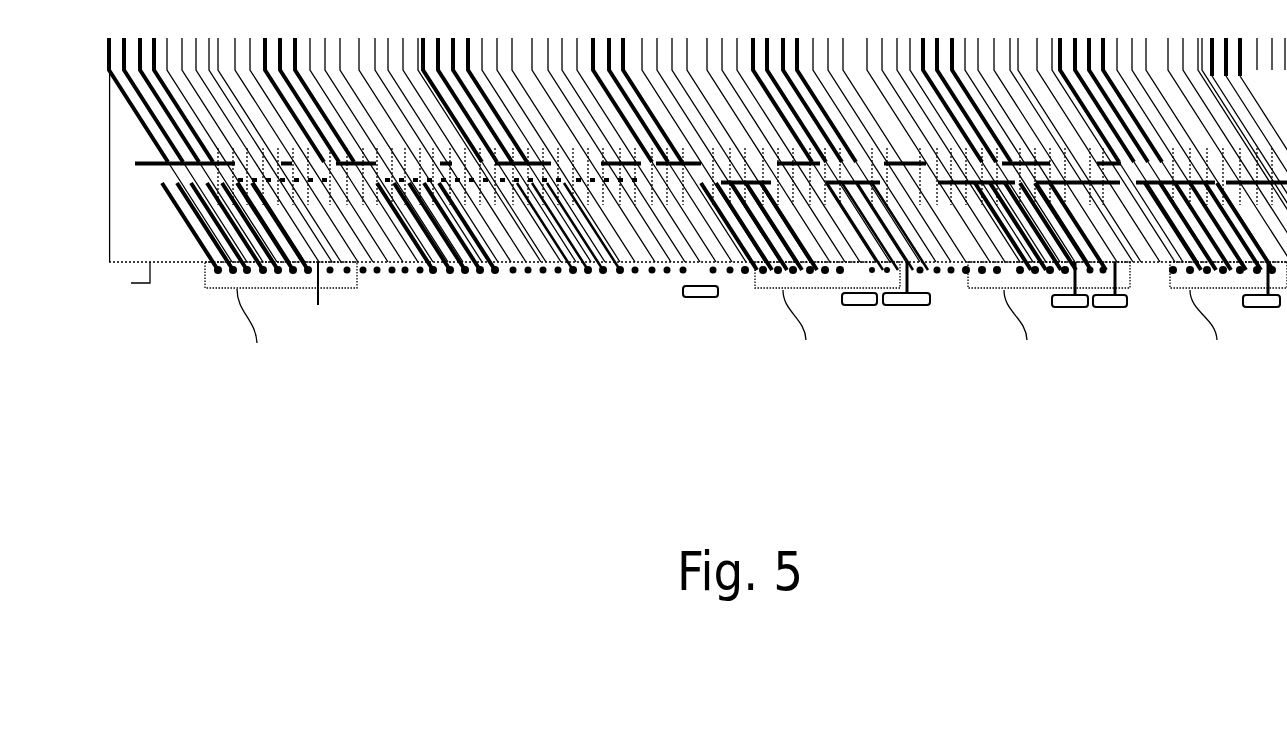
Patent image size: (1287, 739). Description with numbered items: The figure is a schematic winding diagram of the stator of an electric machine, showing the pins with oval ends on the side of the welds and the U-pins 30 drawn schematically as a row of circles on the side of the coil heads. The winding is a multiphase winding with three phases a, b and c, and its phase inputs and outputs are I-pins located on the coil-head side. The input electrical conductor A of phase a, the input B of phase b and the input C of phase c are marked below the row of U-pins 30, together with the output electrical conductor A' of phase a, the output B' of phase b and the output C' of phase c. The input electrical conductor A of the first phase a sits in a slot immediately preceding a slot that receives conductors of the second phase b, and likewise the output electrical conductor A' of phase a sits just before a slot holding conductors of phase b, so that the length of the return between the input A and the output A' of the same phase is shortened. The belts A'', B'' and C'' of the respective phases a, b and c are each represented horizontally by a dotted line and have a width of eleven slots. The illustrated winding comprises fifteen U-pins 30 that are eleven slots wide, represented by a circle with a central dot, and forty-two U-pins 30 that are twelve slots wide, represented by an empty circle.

The U-pins 30 is at (430, 278).
The input electrical conductor of phase a A is at (1110, 303).
The output electrical conductor of phase a A' is at (794, 303).
The belt of phase a A'' is at (733, 334).
The input of phase b B is at (1070, 303).
The output of phase b B' is at (906, 303).
The belt of phase b B'' is at (1025, 334).
The input of phase c C is at (859, 318).
The output of phase c C' is at (700, 309).
The belt of phase c C'' is at (801, 334).